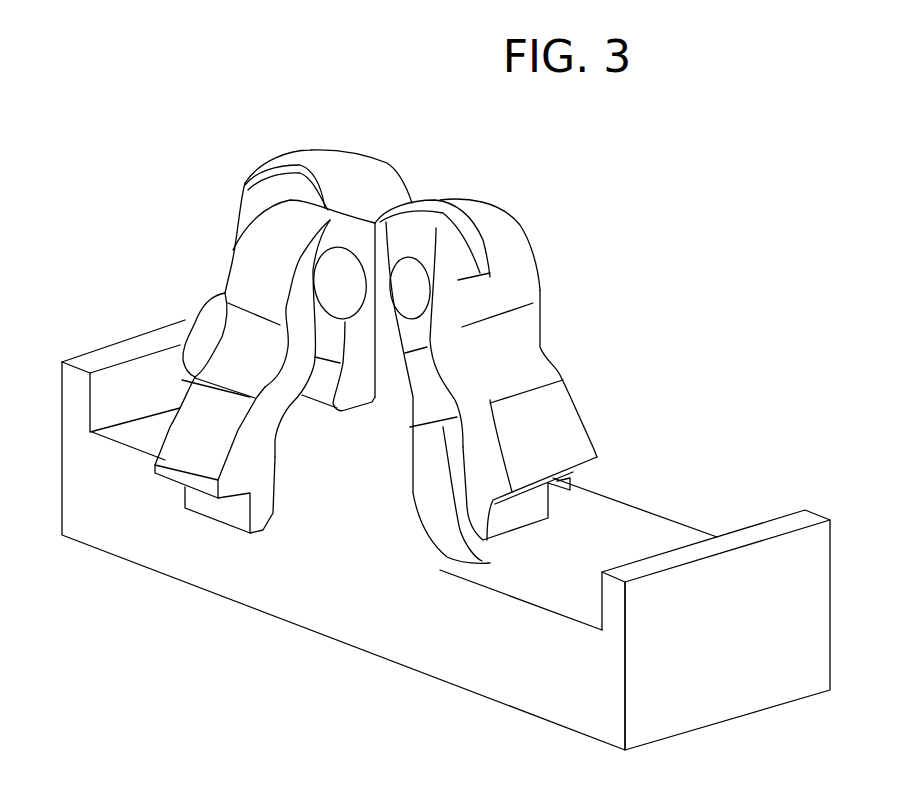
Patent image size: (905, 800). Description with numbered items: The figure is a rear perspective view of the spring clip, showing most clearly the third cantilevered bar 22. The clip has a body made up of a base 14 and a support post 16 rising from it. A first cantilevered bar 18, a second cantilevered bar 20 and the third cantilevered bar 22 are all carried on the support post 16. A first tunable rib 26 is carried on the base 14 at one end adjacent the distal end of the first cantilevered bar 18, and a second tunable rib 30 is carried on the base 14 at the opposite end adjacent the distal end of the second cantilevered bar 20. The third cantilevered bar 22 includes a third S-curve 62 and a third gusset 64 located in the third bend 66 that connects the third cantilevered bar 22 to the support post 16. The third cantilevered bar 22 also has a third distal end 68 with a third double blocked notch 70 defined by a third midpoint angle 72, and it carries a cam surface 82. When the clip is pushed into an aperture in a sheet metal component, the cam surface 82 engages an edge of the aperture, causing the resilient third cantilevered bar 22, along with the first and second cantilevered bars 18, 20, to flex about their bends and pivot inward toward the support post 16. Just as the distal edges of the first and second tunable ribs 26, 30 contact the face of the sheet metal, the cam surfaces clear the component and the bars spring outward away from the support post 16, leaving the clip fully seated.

The base 14 is at (620, 520).
The support post 16 is at (383, 487).
The first cantilevered bar 18 is at (503, 293).
The second cantilevered bar 20 is at (257, 200).
The third cantilevered bar 22 is at (253, 282).
The first tunable rib 26 is at (773, 527).
The second tunable rib 30 is at (93, 350).
The third S-curve 62 is at (182, 290).
The third gusset 64 is at (345, 276).
The third bend 66 is at (342, 248).
The third distal end 68 is at (190, 468).
The third double blocked notch 70 is at (238, 517).
The third midpoint angle 72 is at (245, 497).
The cam surface 82 is at (195, 438).